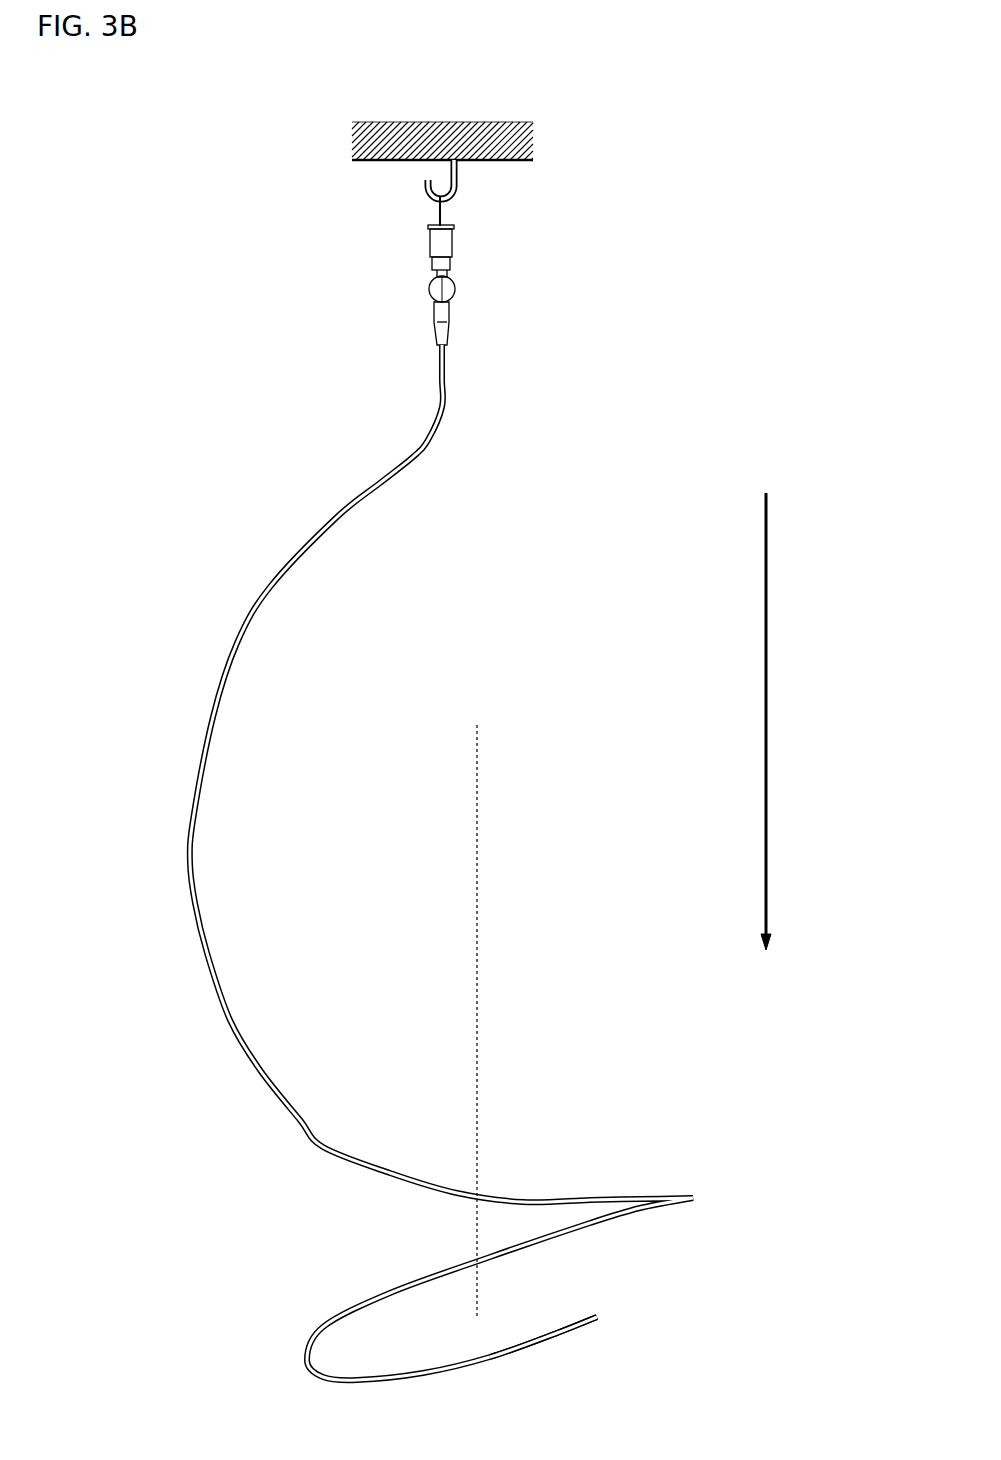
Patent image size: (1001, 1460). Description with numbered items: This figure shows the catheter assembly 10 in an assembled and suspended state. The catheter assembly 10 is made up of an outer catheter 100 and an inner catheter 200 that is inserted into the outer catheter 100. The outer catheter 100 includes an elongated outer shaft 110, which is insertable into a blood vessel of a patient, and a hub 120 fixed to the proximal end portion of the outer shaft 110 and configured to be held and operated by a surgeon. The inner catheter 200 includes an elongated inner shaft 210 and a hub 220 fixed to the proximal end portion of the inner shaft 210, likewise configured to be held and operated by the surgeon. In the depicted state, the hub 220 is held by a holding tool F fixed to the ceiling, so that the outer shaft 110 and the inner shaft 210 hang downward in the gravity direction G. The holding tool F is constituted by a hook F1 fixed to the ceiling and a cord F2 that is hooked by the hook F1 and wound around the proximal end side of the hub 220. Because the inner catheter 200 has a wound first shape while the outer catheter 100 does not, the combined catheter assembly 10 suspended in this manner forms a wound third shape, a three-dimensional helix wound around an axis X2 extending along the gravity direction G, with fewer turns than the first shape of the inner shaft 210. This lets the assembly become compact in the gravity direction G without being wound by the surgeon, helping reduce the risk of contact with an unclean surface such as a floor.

The catheter assembly 10 is at (276, 243).
The outer catheter 100 is at (441, 828).
The outer shaft 110 is at (447, 390).
The hub 120 is at (452, 300).
The inner catheter 200 is at (415, 257).
The inner shaft 210 is at (537, 1340).
The hub 220 is at (452, 240).
The holding tool F is at (558, 176).
The hook F1 is at (459, 182).
The cord F2 is at (443, 208).
The gravity direction G is at (781, 721).
The axis X2 is at (478, 750).